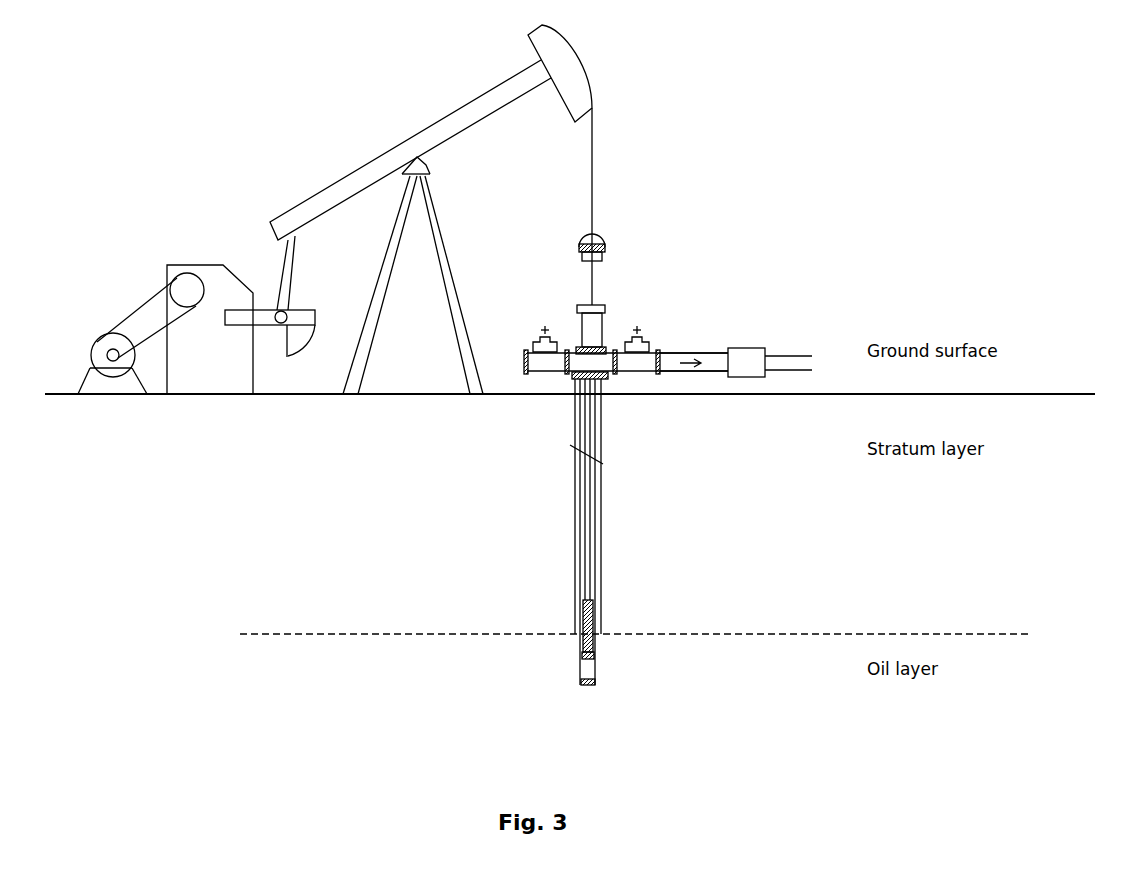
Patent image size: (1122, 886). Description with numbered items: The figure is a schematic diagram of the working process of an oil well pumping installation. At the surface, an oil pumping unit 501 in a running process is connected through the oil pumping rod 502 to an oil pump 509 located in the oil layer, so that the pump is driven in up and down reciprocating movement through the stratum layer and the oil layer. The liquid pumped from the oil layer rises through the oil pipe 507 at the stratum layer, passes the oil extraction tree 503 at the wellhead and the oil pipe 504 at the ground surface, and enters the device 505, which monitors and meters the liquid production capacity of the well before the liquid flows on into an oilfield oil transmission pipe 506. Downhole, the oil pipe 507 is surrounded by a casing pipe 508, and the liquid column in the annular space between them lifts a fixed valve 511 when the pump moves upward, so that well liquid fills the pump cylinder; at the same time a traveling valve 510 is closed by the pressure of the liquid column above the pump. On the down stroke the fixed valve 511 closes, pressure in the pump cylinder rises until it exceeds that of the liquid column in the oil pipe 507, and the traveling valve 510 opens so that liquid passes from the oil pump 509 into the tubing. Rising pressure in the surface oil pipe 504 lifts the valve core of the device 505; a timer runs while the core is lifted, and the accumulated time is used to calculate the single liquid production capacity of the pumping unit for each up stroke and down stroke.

The oil pumping unit 501 is at (592, 102).
The oil pumping rod 502 is at (593, 288).
The oil extraction tree 503 is at (603, 330).
The oil pipe at the ground surface 504 is at (687, 357).
The device 505 is at (750, 347).
The oilfield oil transmission pipe 506 is at (802, 356).
The oil pipe at the stratum layer 507 is at (595, 497).
The casing pipe 508 is at (602, 565).
The oil pump 509 is at (598, 613).
The traveling valve 510 is at (594, 658).
The fixed valve 511 is at (582, 680).